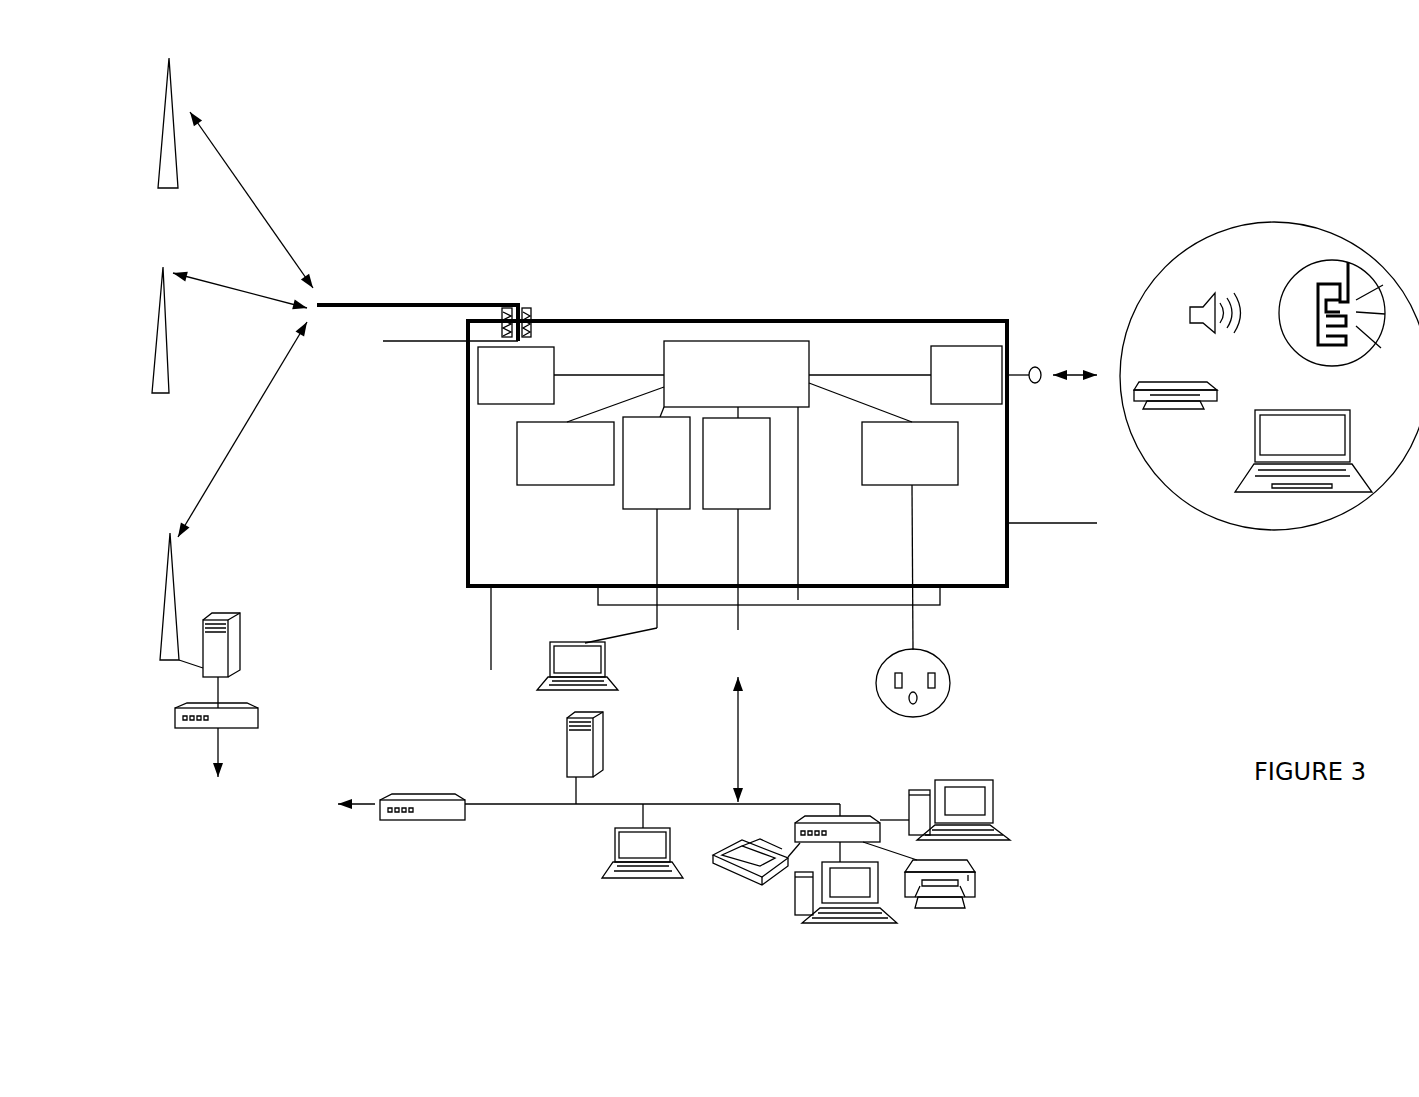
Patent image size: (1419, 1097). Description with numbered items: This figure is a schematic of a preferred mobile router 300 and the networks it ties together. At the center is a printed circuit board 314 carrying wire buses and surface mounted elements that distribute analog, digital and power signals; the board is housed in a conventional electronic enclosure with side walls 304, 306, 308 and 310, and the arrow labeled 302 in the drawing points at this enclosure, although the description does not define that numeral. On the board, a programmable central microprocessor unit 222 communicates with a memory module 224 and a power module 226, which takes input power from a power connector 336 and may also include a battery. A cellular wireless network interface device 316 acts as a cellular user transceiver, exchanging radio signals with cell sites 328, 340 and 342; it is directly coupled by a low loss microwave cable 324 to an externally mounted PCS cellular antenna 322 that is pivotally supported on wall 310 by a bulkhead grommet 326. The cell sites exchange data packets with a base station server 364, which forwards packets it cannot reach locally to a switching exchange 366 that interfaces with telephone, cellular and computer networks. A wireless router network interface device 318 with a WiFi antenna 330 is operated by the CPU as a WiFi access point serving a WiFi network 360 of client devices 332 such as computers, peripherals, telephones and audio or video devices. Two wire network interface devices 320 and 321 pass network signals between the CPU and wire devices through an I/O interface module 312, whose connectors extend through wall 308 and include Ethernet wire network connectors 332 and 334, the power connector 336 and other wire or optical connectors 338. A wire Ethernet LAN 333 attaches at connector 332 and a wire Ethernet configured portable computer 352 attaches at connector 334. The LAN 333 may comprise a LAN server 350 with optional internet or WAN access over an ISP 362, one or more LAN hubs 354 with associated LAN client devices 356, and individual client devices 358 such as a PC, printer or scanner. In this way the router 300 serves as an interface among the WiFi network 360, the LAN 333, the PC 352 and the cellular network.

The mobile router 300 is at (790, 99).
The wireless communication device 302 is at (450, 530).
The side wall 304 is at (467, 475).
The side wall 306 is at (1076, 523).
The side wall 308 is at (487, 646).
The side wall 310 is at (892, 320).
The I/O interface module 312 is at (927, 598).
The printed circuit board 314 is at (540, 549).
The cellular wireless network interface device 316 is at (571, 375).
The wireless router network interface device 318 is at (905, 375).
The central microprocessor unit 222 is at (736, 374).
The memory module 224 is at (590, 436).
The power module 226 is at (883, 434).
The wire network interface device 320 is at (736, 458).
The wire network interface device 321 is at (656, 458).
The cellular antenna 322 is at (393, 296).
The low loss microwave cable 324 is at (424, 341).
The bulkhead grommet 326 is at (528, 307).
The cell site 328 is at (208, 173).
The WiFi antenna 330 is at (1033, 353).
The Ethernet wire network connector 332 is at (1303, 317).
The LAN 333 is at (590, 805).
The Ethernet wire network connector 334 is at (628, 588).
The power connector 336 is at (950, 679).
The other wire or optical connectors 338 is at (795, 537).
The cell site 340 is at (229, 330).
The cell site 342 is at (206, 495).
The LAN server 350 is at (577, 753).
The portable computer 352 is at (588, 660).
The LAN hub 354 is at (855, 815).
The LAN client devices 356 is at (977, 803).
The individual client devices 358 is at (627, 880).
The WiFi network 360 is at (1215, 263).
The ISP 362 is at (425, 795).
The base station server 364 is at (240, 643).
The switching exchange 366 is at (177, 727).